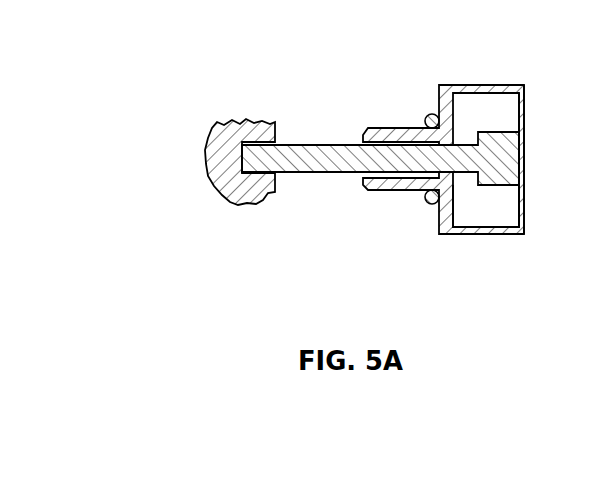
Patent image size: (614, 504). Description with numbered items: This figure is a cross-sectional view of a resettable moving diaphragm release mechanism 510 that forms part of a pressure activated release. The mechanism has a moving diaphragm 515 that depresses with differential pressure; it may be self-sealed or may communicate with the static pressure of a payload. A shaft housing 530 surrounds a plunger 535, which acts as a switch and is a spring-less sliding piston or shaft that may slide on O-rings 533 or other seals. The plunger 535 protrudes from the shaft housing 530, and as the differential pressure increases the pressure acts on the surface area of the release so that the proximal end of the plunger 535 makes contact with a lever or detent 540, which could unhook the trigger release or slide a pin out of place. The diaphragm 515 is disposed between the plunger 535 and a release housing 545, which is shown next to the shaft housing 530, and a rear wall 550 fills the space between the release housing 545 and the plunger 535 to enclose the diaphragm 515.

The moving diaphragm release mechanism 510 is at (425, 143).
The moving diaphragm 515 is at (482, 200).
The shaft housing 530 is at (420, 128).
The O-rings 533 is at (424, 197).
The plunger 535 is at (312, 144).
The lever or detent 540 is at (218, 117).
The release housing 545 is at (474, 159).
The rear wall 550 is at (526, 205).